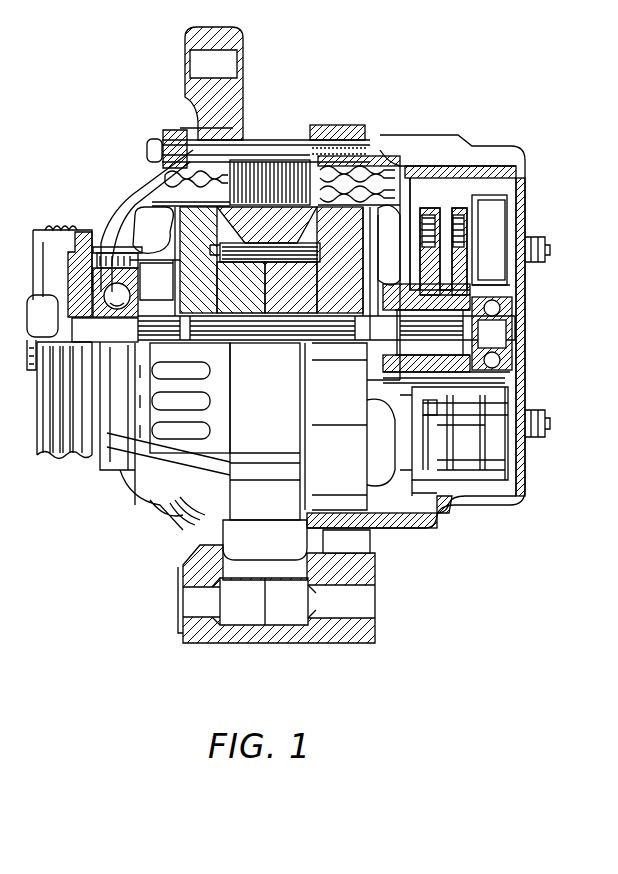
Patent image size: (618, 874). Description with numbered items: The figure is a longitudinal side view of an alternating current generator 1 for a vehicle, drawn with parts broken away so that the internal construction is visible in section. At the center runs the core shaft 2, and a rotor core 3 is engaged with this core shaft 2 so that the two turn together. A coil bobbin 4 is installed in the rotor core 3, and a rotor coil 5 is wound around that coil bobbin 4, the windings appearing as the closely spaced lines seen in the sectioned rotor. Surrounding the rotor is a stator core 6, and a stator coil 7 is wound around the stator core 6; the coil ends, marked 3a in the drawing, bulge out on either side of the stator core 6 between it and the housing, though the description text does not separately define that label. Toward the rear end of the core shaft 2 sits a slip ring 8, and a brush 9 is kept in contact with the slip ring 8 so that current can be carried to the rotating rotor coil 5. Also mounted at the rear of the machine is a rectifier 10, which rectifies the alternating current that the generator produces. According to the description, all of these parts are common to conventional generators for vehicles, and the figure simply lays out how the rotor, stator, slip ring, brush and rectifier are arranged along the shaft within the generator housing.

The alternating current generator 1 is at (530, 112).
The core shaft 2 is at (463, 338).
The rotor core 3 is at (310, 205).
The stator coil end 3a is at (152, 217).
The coil bobbin 4 is at (343, 147).
The rotor coil 5 is at (292, 232).
The stator core 6 is at (262, 163).
The stator coil 7 is at (186, 163).
The slip ring 8 is at (425, 312).
The brush 9 is at (460, 273).
The rectifier 10 is at (468, 410).